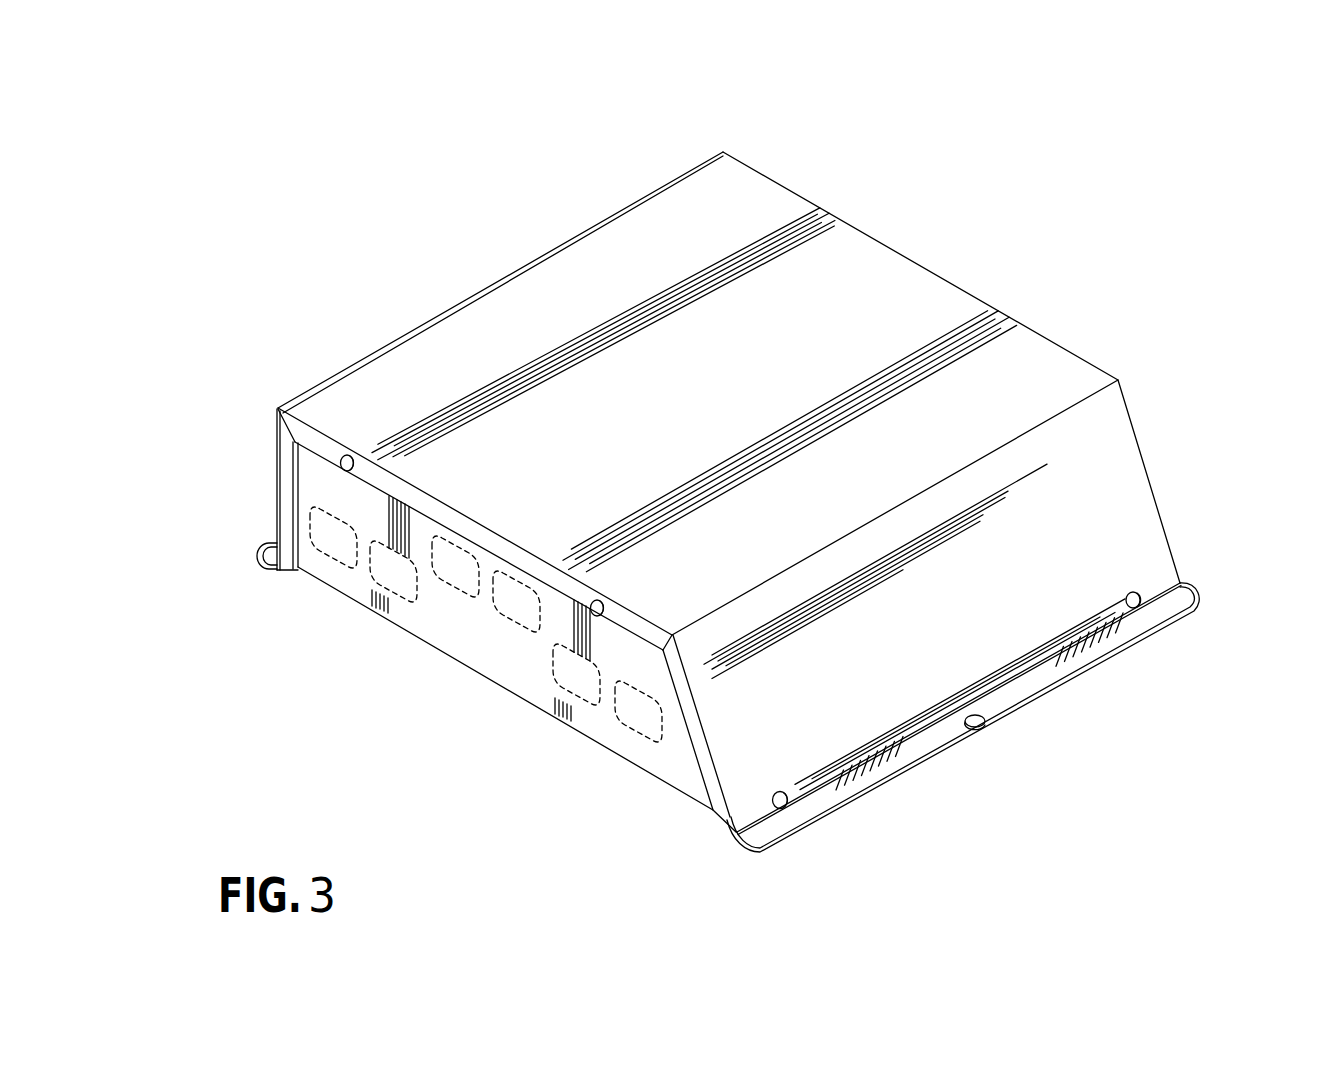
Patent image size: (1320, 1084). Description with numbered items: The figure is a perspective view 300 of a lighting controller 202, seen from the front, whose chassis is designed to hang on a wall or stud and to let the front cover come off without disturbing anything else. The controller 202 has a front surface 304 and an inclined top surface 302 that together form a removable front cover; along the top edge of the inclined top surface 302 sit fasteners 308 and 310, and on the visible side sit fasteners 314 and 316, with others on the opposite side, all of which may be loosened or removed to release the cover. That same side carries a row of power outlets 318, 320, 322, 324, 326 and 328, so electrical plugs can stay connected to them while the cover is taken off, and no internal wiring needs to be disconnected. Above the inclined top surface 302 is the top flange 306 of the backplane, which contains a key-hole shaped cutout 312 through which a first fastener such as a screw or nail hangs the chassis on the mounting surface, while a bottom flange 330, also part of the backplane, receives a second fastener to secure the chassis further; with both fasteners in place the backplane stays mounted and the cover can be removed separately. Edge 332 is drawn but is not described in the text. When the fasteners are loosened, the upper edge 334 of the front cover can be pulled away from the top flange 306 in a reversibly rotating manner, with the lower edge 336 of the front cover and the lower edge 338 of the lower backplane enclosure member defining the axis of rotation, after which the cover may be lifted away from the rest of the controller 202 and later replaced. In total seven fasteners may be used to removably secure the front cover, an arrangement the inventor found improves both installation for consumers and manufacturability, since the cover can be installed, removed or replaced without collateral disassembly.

The perspective view 300 is at (699, 487).
The lighting controller 202 is at (843, 351).
The inclined top surface 302 is at (1120, 490).
The front surface 304 is at (927, 327).
The top flange 306 is at (1040, 682).
The fastener 308 is at (1141, 592).
The fastener 310 is at (782, 792).
The key-hole shaped cutout 312 is at (975, 727).
The fastener 314 is at (604, 603).
The fastener 316 is at (348, 455).
The power outlet 318 is at (645, 748).
The power outlet 320 is at (565, 705).
The power outlet 322 is at (520, 572).
The power outlet 324 is at (453, 535).
The power outlet 326 is at (397, 600).
The power outlet 328 is at (330, 565).
The bottom flange 330 is at (262, 558).
The corner edge 332 is at (683, 790).
The upper edge of the front cover 334 is at (1110, 623).
The lower edge of the front cover 336 is at (540, 258).
The lower edge of the lower backplane enclosure member 338 is at (512, 270).